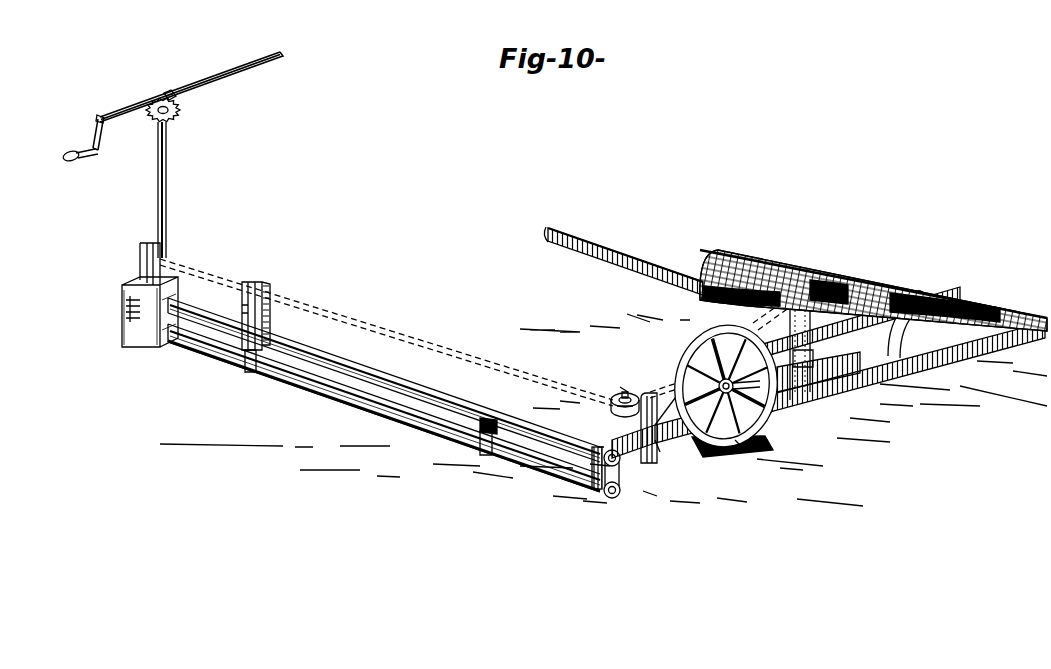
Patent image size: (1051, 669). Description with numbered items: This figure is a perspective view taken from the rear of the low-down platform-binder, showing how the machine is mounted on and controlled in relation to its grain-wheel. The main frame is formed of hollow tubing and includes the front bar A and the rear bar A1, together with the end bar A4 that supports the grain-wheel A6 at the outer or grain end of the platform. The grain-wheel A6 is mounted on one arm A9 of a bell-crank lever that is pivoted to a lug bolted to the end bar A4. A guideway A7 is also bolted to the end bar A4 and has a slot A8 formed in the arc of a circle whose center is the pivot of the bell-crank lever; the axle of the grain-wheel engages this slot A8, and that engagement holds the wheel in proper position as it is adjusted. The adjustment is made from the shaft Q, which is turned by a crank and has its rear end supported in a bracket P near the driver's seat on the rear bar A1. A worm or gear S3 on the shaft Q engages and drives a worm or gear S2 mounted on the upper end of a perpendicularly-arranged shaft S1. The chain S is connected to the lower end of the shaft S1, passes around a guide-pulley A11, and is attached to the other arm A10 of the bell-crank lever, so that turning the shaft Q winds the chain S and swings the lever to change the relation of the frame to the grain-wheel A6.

The front bar A is at (623, 261).
The rear bar A1 is at (358, 366).
The end bar A4 is at (814, 362).
The grain-wheel A6 is at (760, 458).
The guideway A7 is at (706, 455).
The slot A8 is at (692, 365).
The arm of bell-crank lever A9 is at (803, 392).
The arm of bell-crank lever A10 is at (830, 270).
The guide-pulley A11 is at (616, 396).
The bracket P is at (272, 288).
The shaft Q is at (172, 107).
The chain S is at (482, 332).
The perpendicularly-arranged shaft S1 is at (170, 192).
The worm or gear S2 is at (182, 112).
The worm or gear S3 is at (163, 84).